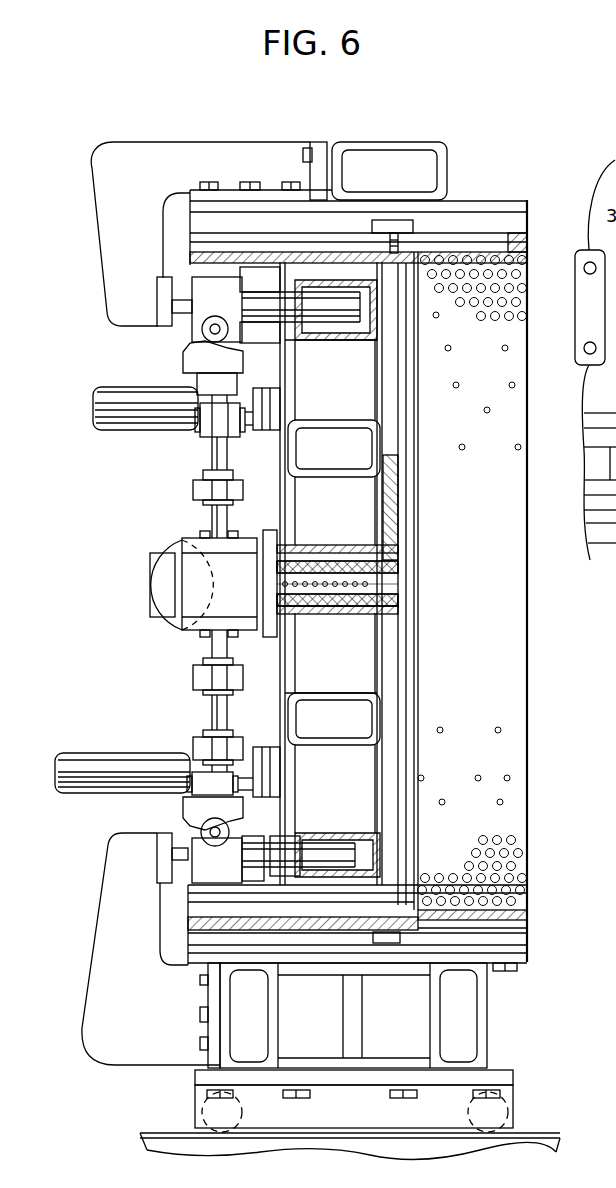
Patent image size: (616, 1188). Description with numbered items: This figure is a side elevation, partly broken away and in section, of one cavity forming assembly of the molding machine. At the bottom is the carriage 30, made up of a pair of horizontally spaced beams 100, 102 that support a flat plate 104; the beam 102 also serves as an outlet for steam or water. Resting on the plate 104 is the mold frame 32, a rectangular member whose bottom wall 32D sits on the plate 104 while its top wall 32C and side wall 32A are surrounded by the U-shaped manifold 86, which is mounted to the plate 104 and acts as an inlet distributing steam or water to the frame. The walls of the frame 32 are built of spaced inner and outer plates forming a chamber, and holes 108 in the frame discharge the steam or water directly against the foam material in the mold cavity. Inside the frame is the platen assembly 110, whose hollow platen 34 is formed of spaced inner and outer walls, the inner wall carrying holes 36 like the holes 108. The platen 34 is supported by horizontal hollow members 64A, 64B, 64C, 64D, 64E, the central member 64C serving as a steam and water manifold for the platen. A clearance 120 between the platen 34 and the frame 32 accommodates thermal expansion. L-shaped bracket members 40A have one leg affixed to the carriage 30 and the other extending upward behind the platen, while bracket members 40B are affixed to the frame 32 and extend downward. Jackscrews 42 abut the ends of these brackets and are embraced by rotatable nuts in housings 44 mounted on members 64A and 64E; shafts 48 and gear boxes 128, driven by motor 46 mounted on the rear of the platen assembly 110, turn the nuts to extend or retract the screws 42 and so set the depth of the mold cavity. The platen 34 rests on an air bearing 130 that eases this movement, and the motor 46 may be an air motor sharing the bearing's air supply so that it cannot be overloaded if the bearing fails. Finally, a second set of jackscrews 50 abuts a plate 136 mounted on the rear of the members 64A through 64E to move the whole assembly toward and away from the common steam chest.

The carriage 30 is at (515, 1048).
The mold frame 32 is at (533, 728).
The side wall 32A is at (513, 660).
The top wall 32C is at (495, 253).
The bottom wall 32D is at (463, 910).
The platen 34 is at (421, 631).
The holes 36 is at (402, 468).
The bracket members 40A is at (115, 995).
The bracket members 40B is at (113, 160).
The jackscrews 42 is at (176, 280).
The housings 44 is at (226, 303).
The motor 46 is at (250, 586).
The shafts 48 is at (205, 458).
The jackscrews 50 is at (163, 410).
The horizontal hollow member 64A is at (359, 341).
The horizontal hollow member 64B is at (366, 426).
The central member 64C is at (362, 612).
The horizontal hollow member 64D is at (360, 748).
The horizontal hollow member 64E is at (357, 822).
The manifold 86 is at (462, 118).
The beam 100 is at (272, 1012).
The beam 102 is at (483, 1017).
The flat plate 104 is at (513, 953).
The holes 108 is at (462, 255).
The platen assembly 110 is at (262, 508).
The clearance 120 is at (466, 221).
The gear boxes 128 is at (188, 353).
The air bearing 130 is at (255, 899).
The plate 136 is at (265, 682).